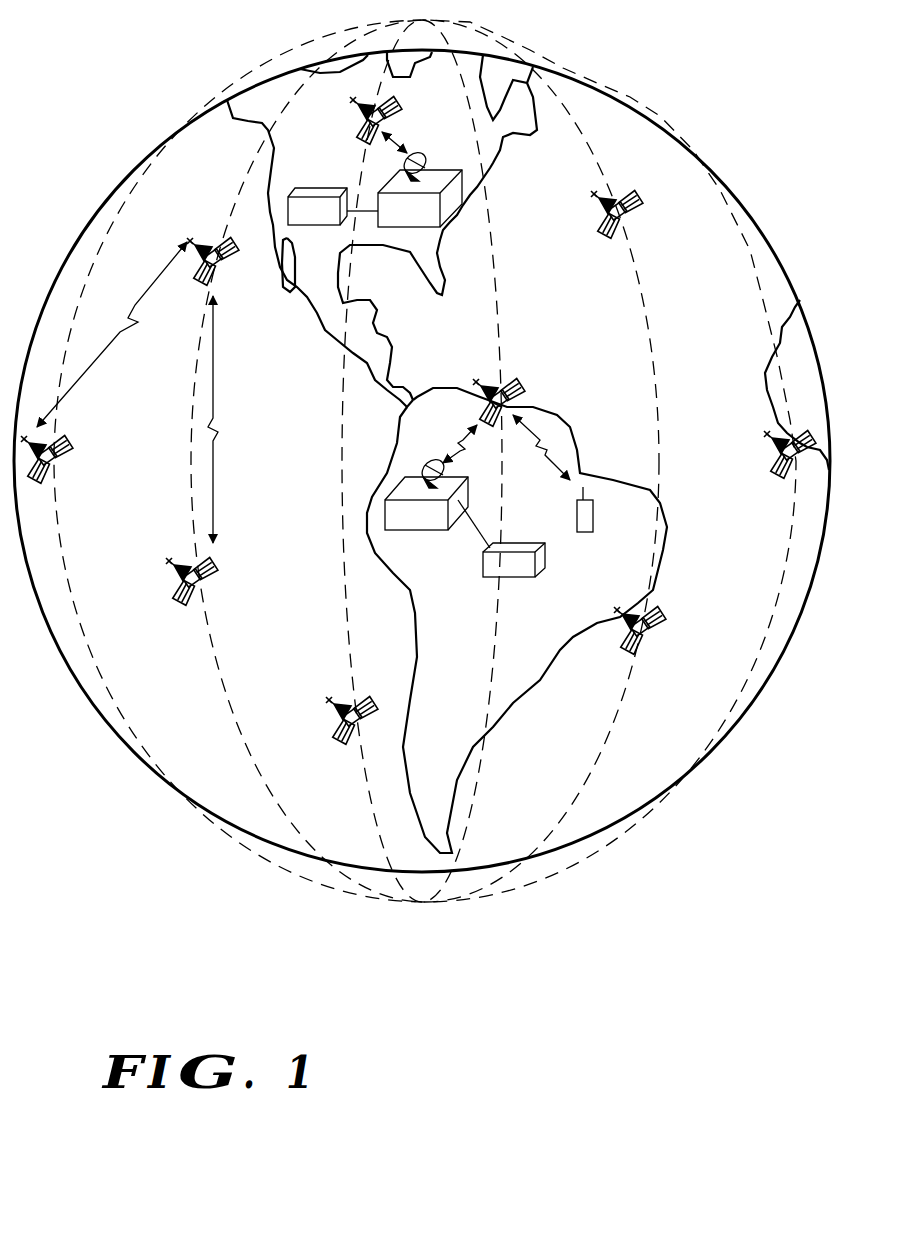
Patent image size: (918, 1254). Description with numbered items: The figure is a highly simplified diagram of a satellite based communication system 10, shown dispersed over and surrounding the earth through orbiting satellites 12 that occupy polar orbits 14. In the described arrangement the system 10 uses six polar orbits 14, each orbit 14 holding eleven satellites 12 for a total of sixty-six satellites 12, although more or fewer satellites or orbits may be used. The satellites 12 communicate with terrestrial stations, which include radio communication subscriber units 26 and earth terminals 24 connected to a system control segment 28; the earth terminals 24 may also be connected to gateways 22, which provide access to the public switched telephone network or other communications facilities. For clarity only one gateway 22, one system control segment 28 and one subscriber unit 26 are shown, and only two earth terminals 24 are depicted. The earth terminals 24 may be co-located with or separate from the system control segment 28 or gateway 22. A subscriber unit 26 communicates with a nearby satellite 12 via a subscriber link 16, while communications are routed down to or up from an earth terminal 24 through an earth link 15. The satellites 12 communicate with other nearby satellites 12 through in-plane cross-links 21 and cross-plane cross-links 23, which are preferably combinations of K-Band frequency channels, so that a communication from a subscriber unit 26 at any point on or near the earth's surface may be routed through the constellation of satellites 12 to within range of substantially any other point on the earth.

The satellite based communication system 10 is at (416, 996).
The satellite 12 is at (352, 142).
The orbit 14 is at (242, 182).
The earth link 15 is at (460, 447).
The subscriber link 16 is at (548, 417).
The in-plane cross-link 21 is at (216, 404).
The gateway 22 is at (518, 577).
The cross-plane cross-link 23 is at (124, 328).
The earth terminal 24 is at (443, 170).
The subscriber unit 26 is at (581, 532).
The system control segment 28 is at (303, 225).